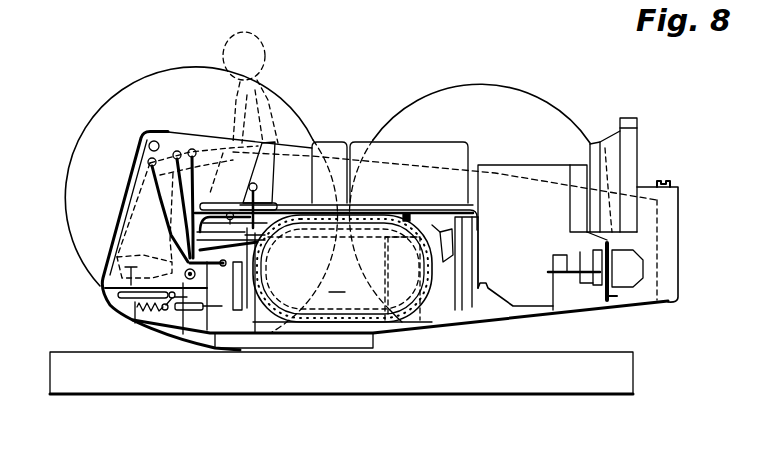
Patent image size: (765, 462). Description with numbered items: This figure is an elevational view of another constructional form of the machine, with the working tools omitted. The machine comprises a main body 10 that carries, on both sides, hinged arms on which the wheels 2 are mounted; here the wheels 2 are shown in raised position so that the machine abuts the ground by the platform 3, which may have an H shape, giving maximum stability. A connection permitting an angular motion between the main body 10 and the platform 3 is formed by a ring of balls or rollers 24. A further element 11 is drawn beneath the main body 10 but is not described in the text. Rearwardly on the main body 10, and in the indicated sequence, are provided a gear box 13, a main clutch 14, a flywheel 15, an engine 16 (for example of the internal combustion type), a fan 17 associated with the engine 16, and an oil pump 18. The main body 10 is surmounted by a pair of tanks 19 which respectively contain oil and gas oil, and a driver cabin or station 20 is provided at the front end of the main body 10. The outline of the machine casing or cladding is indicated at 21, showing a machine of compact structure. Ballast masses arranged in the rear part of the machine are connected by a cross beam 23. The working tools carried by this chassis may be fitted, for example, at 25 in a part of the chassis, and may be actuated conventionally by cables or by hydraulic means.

The wheels 2 is at (92, 172).
The platform 3 is at (228, 377).
The main body 10 is at (342, 268).
The tank support 11 is at (350, 317).
The gear box 13 is at (400, 310).
The main clutch 14 is at (448, 303).
The flywheel 15 is at (470, 300).
The engine 16 is at (532, 288).
The fan 17 is at (612, 155).
The oil pump 18 is at (640, 283).
The tanks 19 is at (387, 147).
The driver cabin 20 is at (208, 196).
The machine casing 21 is at (185, 136).
The cross beam 23 is at (663, 181).
The ring of balls or rollers 24 is at (292, 345).
The tool fitting location 25 is at (153, 142).